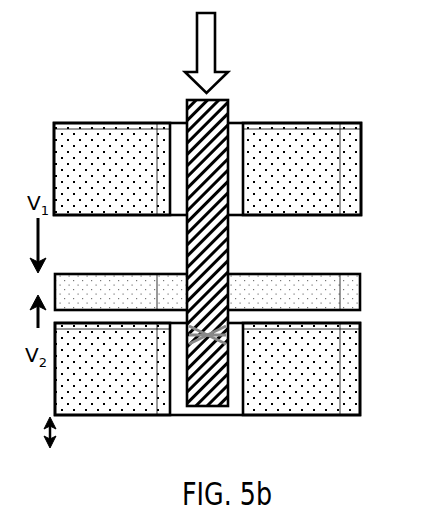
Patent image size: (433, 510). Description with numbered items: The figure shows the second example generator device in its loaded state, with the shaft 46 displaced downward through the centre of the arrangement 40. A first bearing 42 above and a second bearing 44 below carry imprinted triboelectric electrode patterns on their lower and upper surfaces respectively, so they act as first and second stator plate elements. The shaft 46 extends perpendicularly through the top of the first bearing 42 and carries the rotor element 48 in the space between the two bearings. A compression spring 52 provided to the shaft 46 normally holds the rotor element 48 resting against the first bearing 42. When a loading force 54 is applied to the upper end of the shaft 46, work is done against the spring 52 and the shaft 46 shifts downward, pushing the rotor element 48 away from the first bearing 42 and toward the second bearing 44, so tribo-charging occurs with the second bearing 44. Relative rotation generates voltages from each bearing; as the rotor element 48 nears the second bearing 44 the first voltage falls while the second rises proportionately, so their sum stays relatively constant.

The arrangement 40 is at (62, 74).
The first bearing 42 is at (318, 122).
The second bearing 44 is at (360, 370).
The shaft 46 is at (186, 122).
The rotor element 48 is at (348, 274).
The compression spring 52 is at (227, 337).
The loading force 54 is at (215, 37).